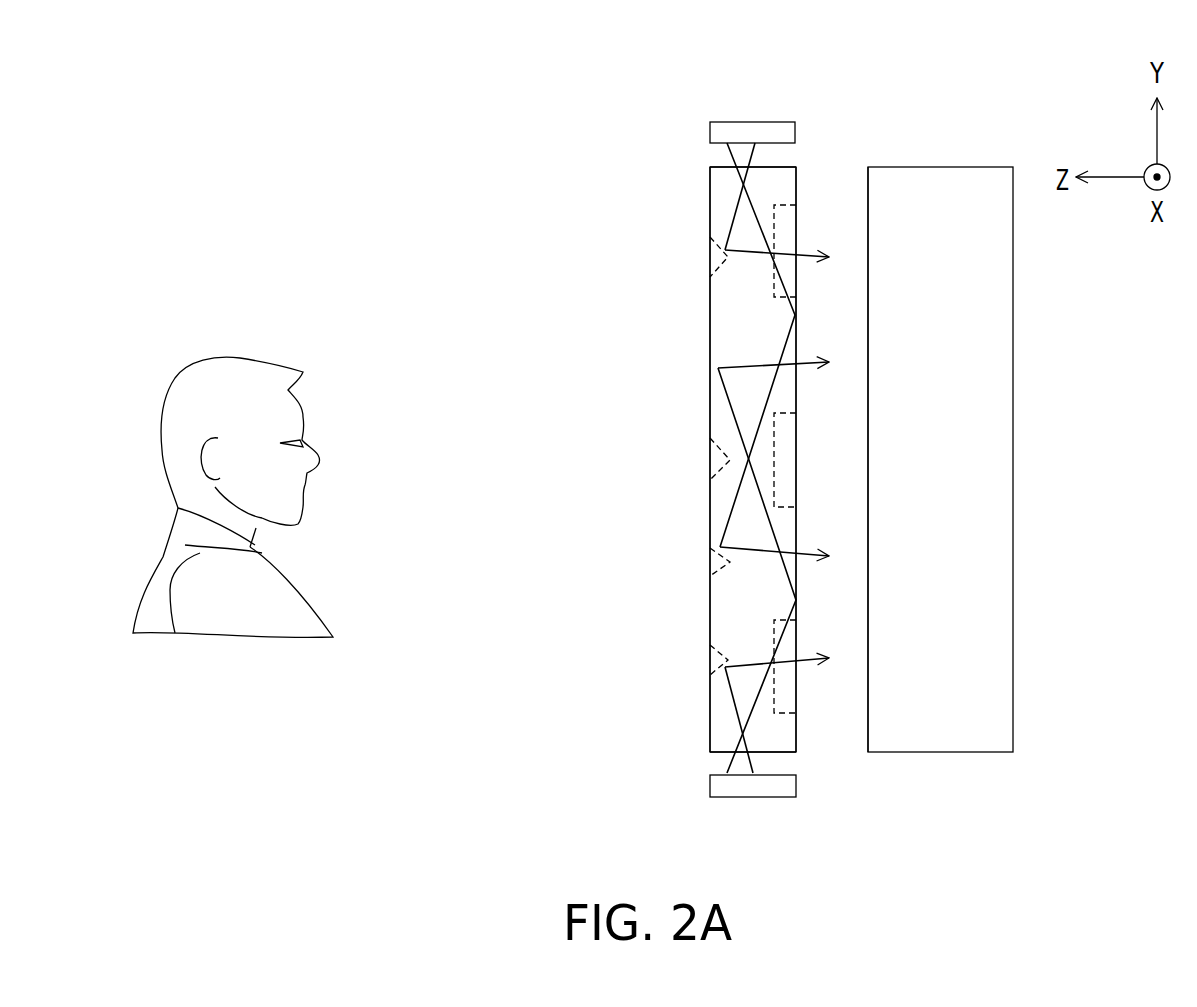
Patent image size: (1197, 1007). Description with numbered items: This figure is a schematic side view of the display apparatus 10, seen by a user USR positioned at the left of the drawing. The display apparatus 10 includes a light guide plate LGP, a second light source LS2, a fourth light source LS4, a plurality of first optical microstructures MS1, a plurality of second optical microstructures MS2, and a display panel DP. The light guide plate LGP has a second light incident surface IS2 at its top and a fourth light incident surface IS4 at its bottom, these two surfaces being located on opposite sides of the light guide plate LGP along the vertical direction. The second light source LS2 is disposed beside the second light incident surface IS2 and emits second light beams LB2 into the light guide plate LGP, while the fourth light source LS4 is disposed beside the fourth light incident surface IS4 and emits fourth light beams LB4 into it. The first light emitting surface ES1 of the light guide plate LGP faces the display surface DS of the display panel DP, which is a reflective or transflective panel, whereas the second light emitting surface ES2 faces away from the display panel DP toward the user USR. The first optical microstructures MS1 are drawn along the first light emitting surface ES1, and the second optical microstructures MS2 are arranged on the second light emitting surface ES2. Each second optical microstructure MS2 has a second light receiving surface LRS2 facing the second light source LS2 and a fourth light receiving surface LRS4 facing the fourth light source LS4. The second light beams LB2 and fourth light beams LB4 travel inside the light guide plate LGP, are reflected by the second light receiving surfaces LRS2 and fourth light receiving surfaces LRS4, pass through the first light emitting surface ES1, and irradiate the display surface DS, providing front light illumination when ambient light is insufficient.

The display apparatus 10 is at (1070, 877).
The user USR is at (233, 527).
The light guide plate LGP is at (725, 185).
The first light emitting surface ES1 is at (798, 178).
The second light emitting surface ES2 is at (709, 223).
The second light incident surface IS2 is at (775, 165).
The fourth light incident surface IS4 is at (775, 754).
The second light source LS2 is at (725, 133).
The fourth light source LS4 is at (723, 782).
The first optical microstructures MS1 is at (780, 234).
The second optical microstructures MS2 is at (721, 357).
The second light receiving surface LRS2 is at (713, 544).
The fourth light receiving surface LRS4 is at (715, 678).
The second light beams LB2 is at (785, 337).
The fourth light beams LB4 is at (775, 582).
The display panel DP is at (995, 440).
The display surface DS is at (866, 513).